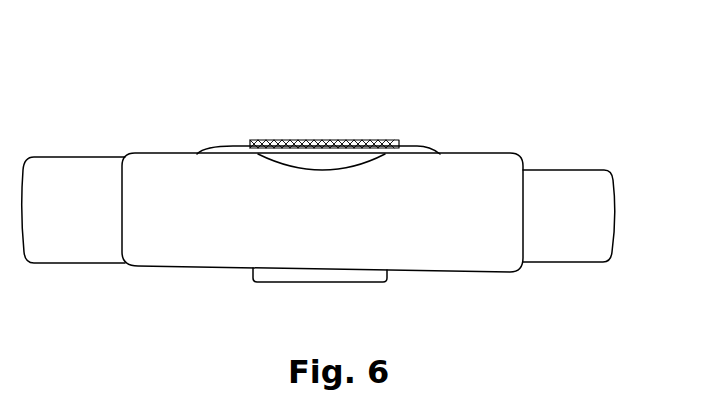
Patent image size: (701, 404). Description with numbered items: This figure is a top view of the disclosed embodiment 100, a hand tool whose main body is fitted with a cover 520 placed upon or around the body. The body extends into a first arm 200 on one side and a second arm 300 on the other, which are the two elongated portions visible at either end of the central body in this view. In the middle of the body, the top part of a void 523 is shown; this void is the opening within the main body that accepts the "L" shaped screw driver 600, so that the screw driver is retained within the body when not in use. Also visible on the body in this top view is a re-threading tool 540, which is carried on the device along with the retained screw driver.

The disclosed embodiment 100 is at (295, 201).
The first arm 200 is at (66, 192).
The second arm 300 is at (582, 198).
The cover 520 is at (192, 243).
The void 523 is at (302, 164).
The re-threading tool 540 is at (372, 275).
The "L" shaped screw driver 600 is at (315, 137).